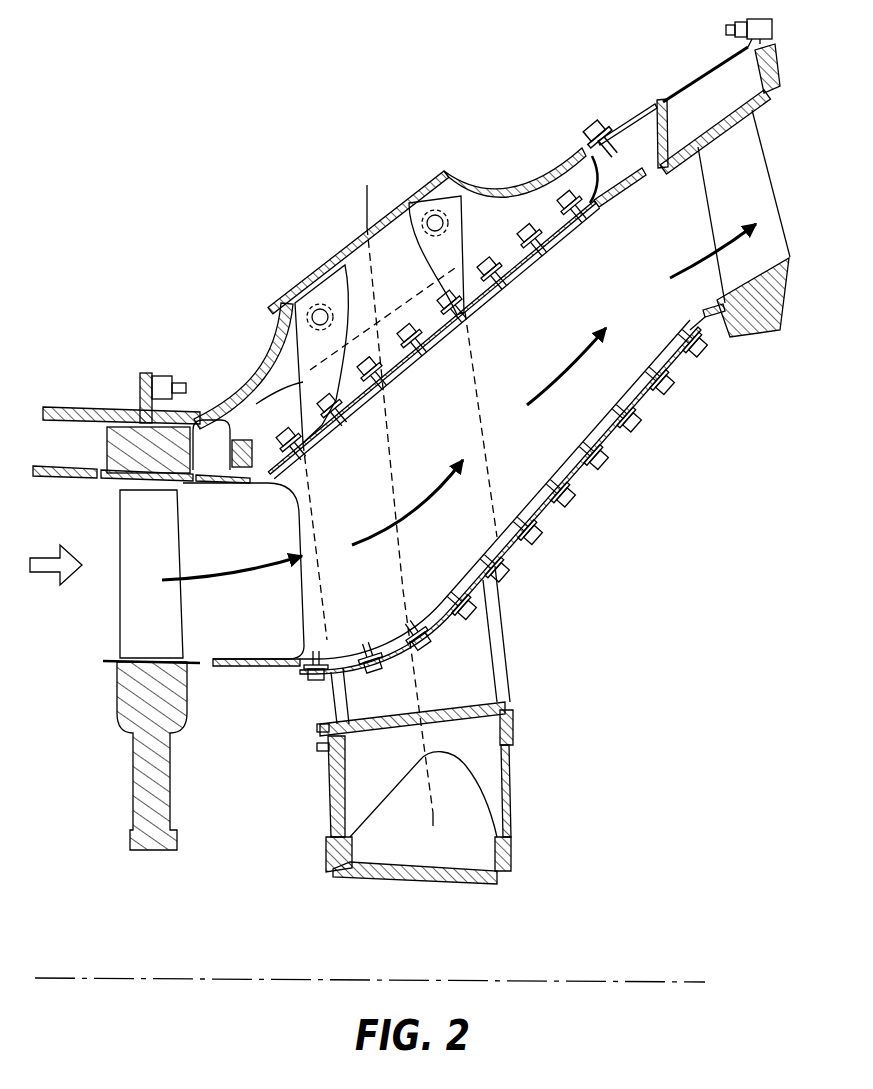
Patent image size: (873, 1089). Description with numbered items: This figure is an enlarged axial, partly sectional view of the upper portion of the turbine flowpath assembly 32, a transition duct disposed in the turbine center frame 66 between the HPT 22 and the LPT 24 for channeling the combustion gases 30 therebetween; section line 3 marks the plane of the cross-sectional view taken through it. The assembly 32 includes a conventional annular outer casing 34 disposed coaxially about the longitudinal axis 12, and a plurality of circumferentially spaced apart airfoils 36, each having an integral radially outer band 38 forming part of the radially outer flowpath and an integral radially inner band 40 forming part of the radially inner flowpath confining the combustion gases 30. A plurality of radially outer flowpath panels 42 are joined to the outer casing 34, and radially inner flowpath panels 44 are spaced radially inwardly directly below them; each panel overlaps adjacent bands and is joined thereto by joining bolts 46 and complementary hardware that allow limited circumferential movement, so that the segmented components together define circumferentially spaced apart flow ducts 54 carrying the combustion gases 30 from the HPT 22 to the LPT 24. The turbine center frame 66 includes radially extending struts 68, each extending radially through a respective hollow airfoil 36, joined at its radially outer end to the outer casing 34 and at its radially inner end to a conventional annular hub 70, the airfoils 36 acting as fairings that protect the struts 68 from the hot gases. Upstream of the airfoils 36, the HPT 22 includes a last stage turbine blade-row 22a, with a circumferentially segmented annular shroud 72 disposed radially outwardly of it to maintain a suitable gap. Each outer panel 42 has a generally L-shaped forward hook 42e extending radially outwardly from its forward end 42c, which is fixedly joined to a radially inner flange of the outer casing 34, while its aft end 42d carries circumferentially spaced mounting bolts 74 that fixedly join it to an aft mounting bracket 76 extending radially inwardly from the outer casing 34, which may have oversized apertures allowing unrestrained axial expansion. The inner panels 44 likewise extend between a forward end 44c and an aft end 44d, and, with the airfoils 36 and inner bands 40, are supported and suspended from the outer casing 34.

The section line 3- 3 is at (363, 187).
The longitudinal axis 12 is at (607, 981).
The HPT 22 is at (118, 699).
The last stage turbine blade-row 22a is at (117, 630).
The LPT 24 is at (768, 166).
The combustion gases 30 is at (50, 553).
The turbine flowpath assembly 32 is at (290, 685).
The outer casing 34 is at (266, 360).
The airfoils 36 is at (300, 613).
The outer band 38 is at (532, 280).
The inner band 40 is at (563, 457).
The outer flowpath panels 42 is at (515, 247).
The forward end of outer panel 42c is at (227, 487).
The aft end of outer panel 42d is at (627, 174).
The forward hook of outer panel 42e is at (254, 483).
The inner flowpath panels 44 is at (573, 463).
The forward end of inner panel 44c is at (243, 658).
The aft end of inner panel 44d is at (690, 328).
The joining bolts 46 is at (528, 237).
The flow ducts 54 is at (428, 453).
The turbine center frame 66 is at (565, 706).
The struts 68 is at (513, 652).
The hub 70 is at (512, 800).
The shroud 72 is at (182, 485).
The mounting bolts 74 is at (557, 183).
The aft mounting bracket 76 is at (612, 178).